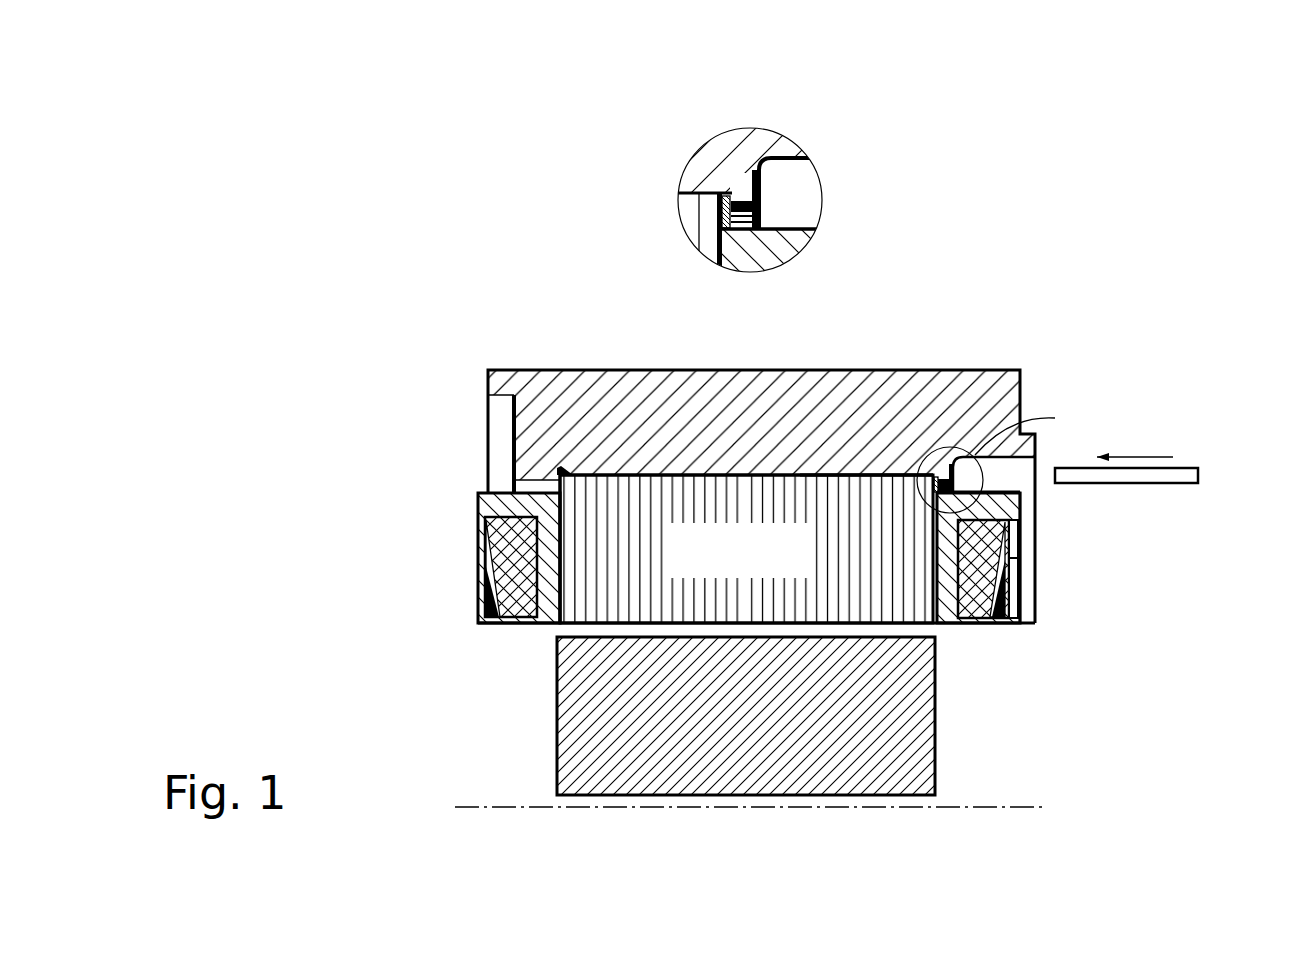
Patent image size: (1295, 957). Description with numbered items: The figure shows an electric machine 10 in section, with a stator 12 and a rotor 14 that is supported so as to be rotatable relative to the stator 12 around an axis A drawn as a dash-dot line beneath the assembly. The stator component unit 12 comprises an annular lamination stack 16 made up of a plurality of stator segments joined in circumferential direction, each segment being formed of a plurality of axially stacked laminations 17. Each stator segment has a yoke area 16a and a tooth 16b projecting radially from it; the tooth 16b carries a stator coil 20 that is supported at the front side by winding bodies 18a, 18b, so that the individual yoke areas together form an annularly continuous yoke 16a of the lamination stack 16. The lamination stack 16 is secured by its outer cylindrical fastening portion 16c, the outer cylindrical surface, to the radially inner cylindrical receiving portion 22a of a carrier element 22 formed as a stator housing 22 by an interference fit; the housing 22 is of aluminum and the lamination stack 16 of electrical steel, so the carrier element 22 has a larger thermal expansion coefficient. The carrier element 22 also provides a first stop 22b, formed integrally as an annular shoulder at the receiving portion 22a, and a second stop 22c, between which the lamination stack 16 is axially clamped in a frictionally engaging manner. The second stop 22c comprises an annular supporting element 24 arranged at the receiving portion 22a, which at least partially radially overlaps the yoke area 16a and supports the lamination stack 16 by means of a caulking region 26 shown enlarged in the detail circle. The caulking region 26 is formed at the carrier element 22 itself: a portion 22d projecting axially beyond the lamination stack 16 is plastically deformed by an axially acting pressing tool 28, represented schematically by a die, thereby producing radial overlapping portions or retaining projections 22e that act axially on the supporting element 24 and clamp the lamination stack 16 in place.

The electric machine 10 is at (1008, 235).
The stator 12 is at (388, 495).
The rotor 14 is at (557, 727).
The lamination stack 16 is at (702, 438).
The yoke area 16a is at (556, 482).
The tooth 16b is at (699, 569).
The outer cylindrical fastening portion 16c is at (810, 474).
The laminations 17 is at (560, 622).
The winding body 18a is at (507, 507).
The winding body 18b is at (1007, 510).
The stator coil 20 is at (513, 562).
The carrier element 22 is at (952, 462).
The receiving portion 22a is at (843, 467).
The first stop 22b is at (556, 472).
The second stop 22c is at (988, 480).
The axially projecting portion 22d is at (742, 198).
The radial retaining projection 22e is at (840, 346).
The supporting element 24 is at (960, 457).
The caulking region 26 is at (762, 187).
The pressing tool 28 is at (1193, 484).
The axis A is at (492, 808).